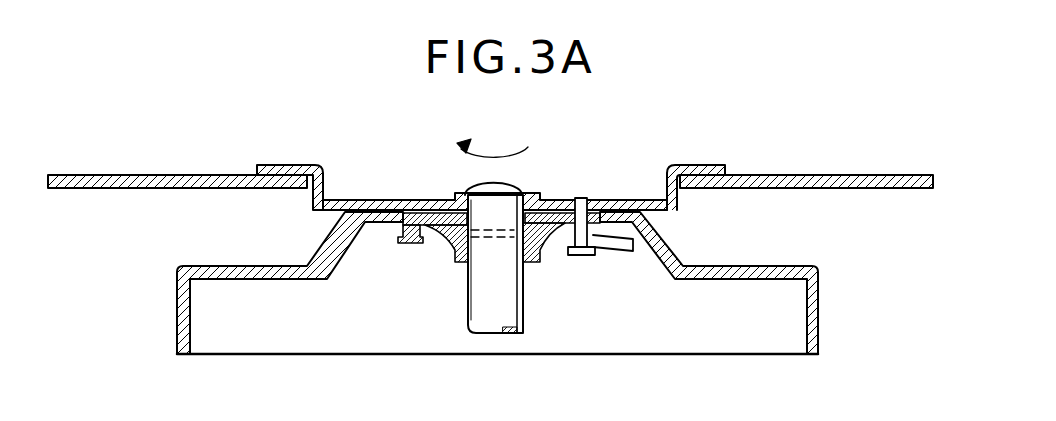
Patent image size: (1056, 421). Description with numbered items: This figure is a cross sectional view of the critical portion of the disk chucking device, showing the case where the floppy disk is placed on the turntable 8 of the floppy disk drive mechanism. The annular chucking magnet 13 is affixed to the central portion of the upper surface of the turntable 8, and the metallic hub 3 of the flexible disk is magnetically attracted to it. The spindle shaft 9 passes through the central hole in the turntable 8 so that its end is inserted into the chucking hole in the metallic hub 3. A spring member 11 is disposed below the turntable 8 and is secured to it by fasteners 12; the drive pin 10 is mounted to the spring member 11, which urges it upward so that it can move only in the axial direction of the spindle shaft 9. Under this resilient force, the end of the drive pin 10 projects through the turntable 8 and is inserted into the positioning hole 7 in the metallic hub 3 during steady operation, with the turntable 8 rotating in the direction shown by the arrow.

The metallic hub 3 is at (672, 198).
The positioning hole 7 is at (597, 202).
The turntable 8 is at (818, 285).
The spindle shaft 9 is at (472, 316).
The drive pin 10 is at (581, 199).
The spring member 11 is at (550, 240).
The fastener 12 is at (407, 243).
The chucking magnet 13 is at (552, 214).